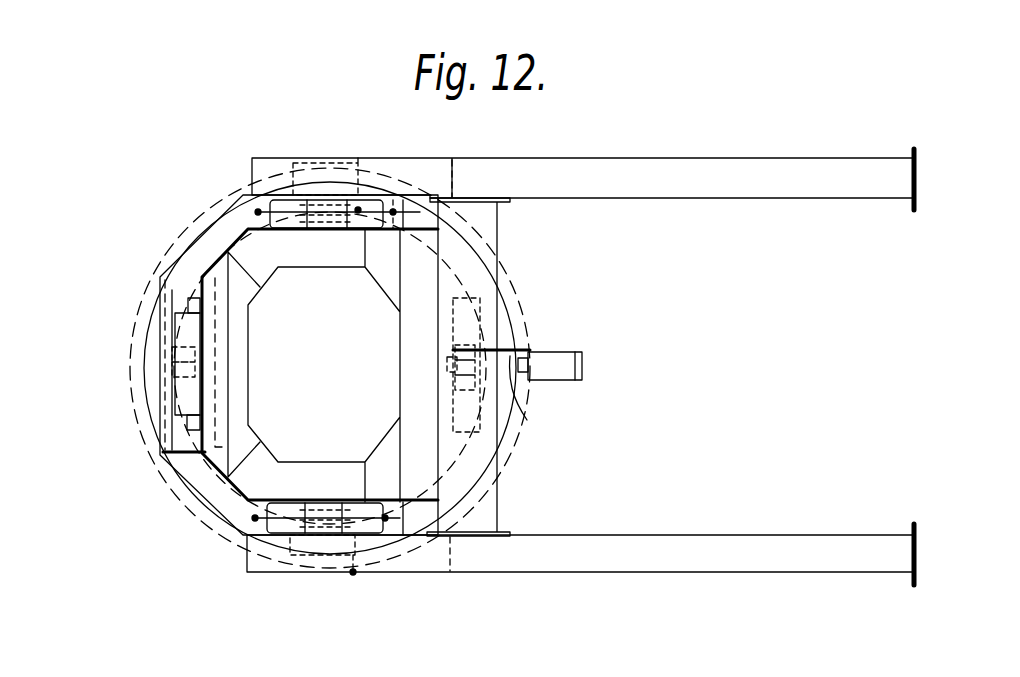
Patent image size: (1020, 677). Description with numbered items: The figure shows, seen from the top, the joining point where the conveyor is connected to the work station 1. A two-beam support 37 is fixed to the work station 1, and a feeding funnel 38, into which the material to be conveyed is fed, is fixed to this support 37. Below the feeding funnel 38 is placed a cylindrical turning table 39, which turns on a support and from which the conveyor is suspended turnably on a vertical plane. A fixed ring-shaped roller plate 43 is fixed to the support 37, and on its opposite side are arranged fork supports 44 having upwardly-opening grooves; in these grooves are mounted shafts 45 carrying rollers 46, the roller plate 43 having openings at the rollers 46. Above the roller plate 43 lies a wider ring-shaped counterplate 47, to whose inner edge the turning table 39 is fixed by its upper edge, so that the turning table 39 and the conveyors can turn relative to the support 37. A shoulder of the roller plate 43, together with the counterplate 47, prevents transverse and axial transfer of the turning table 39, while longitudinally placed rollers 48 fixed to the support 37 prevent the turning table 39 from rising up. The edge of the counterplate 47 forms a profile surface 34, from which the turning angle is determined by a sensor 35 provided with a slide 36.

The work station 1 is at (912, 165).
The profile surface 34 is at (502, 334).
The sensor 35 is at (582, 366).
The slide 36 is at (538, 397).
The two-beam support 37 is at (678, 183).
The feeding funnel 38 is at (233, 250).
The turning table 39 is at (183, 477).
The roller plate 43 is at (187, 423).
The fork supports 44 is at (306, 180).
The shafts 45 is at (328, 172).
The rollers 46 is at (316, 178).
The counterplate 47 is at (155, 318).
The longitudinally placed rollers 48 is at (185, 370).